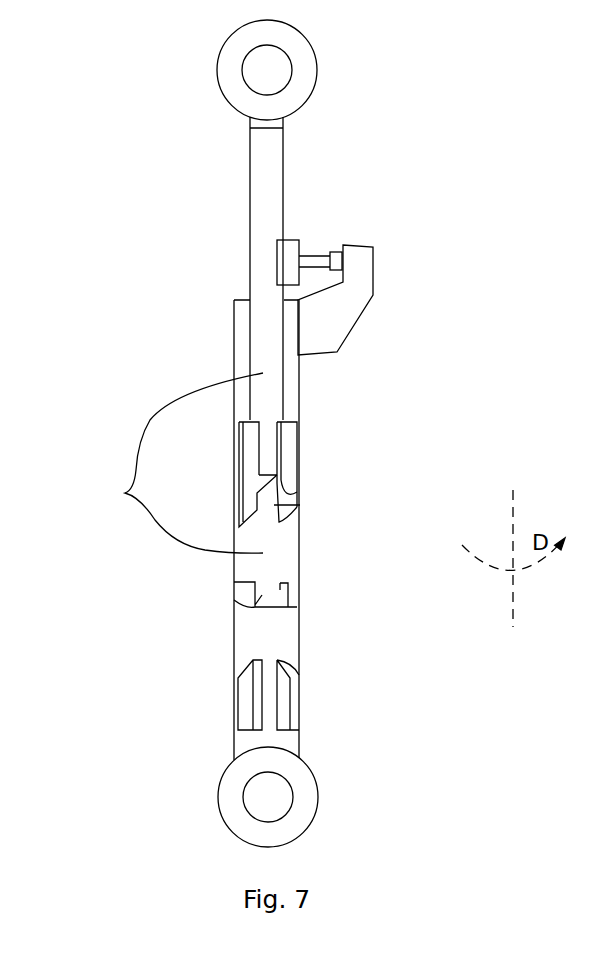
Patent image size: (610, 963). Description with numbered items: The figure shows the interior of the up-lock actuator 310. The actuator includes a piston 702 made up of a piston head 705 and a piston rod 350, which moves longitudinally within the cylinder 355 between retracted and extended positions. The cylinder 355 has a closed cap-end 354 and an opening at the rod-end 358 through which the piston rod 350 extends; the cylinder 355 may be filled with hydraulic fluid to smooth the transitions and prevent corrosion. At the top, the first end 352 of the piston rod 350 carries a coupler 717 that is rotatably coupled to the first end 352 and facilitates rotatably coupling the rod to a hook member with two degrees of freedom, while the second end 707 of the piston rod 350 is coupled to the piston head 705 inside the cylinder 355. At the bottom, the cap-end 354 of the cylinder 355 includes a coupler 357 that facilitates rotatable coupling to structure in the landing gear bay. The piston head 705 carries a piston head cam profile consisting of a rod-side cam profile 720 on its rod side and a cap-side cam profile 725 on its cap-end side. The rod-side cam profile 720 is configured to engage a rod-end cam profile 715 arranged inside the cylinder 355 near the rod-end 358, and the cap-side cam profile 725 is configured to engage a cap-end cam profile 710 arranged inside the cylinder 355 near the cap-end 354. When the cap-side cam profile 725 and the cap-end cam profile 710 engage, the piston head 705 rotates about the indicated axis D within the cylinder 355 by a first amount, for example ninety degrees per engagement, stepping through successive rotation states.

The up-lock actuator 310 is at (153, 152).
The coupler 717 is at (302, 60).
The first end 352 is at (331, 109).
The piston rod 350 is at (283, 188).
The rod-end 358 is at (192, 363).
The cylinder 355 is at (300, 643).
The piston 702 is at (125, 493).
The second end 707 is at (251, 465).
The rod-end cam profile 715 is at (289, 445).
The rod-side cam profile 720 is at (300, 505).
The piston head 705 is at (290, 550).
The cap-side cam profile 725 is at (263, 595).
The cap-end cam profile 710 is at (292, 693).
The cap-end 354 is at (338, 752).
The coupler 357 is at (277, 810).